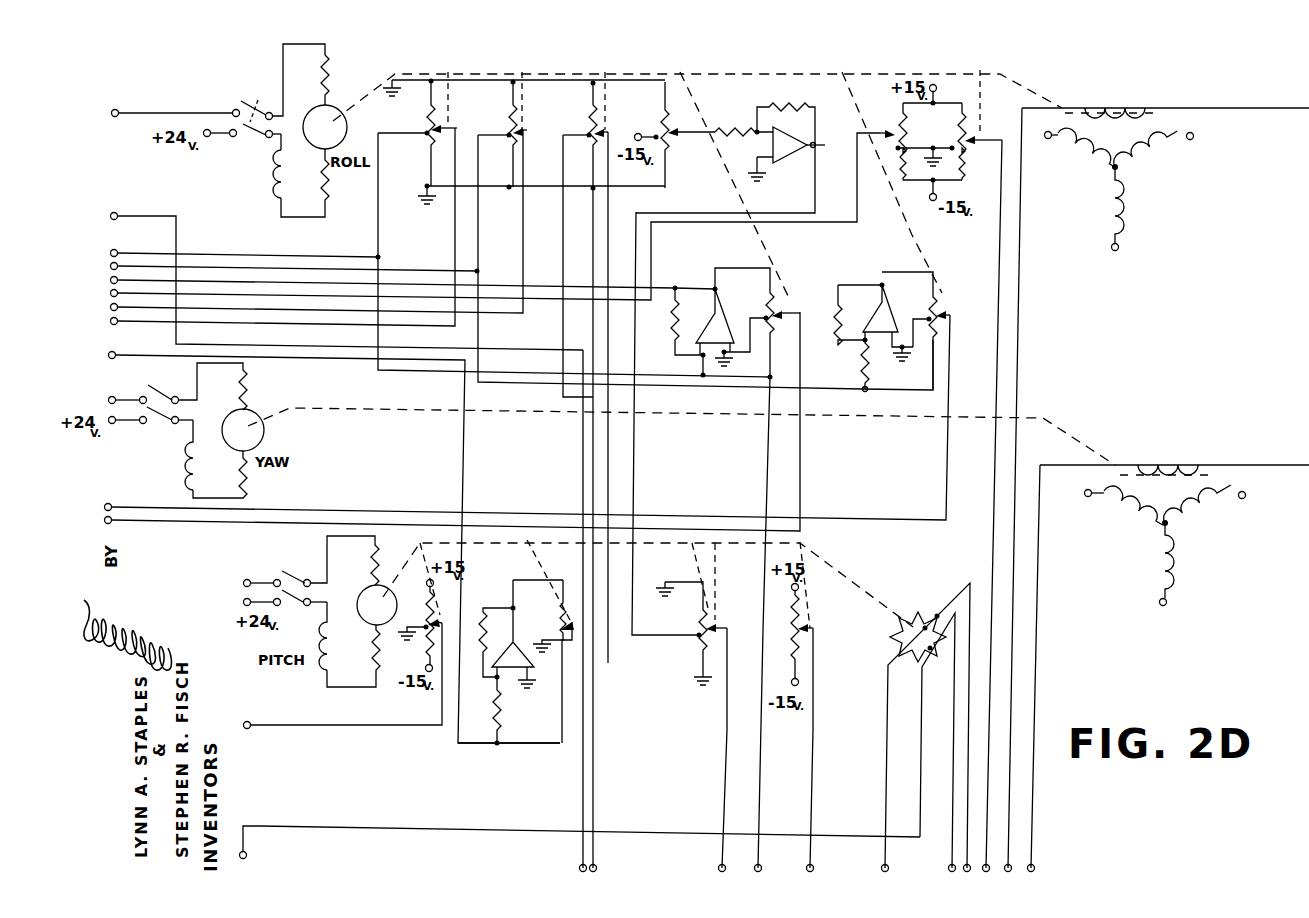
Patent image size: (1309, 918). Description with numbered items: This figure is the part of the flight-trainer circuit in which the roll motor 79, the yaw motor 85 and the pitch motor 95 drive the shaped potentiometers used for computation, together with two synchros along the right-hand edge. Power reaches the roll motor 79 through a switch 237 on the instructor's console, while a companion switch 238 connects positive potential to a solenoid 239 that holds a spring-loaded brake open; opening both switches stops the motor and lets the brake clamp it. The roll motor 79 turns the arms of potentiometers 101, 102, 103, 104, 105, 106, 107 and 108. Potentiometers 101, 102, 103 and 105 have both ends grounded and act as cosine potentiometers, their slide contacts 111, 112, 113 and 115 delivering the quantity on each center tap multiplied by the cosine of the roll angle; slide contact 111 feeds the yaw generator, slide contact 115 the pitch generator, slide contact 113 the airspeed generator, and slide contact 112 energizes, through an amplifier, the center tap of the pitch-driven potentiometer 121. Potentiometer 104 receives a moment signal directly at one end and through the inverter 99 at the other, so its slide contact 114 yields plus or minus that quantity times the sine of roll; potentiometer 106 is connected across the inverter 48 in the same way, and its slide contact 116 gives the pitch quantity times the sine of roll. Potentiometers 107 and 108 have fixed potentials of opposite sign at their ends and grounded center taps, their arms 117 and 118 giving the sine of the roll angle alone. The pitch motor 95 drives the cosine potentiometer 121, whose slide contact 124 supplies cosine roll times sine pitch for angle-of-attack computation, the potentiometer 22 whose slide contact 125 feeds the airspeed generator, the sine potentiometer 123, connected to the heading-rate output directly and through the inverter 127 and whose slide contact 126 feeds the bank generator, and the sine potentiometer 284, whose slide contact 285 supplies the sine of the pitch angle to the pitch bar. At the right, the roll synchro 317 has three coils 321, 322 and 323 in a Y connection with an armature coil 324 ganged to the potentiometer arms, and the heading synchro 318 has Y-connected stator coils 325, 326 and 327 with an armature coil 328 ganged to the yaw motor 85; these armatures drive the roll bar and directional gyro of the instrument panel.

The pitch offset potentiometer 22 is at (427, 610).
The inverter 48 is at (705, 333).
The roll motor 79 is at (682, 111).
The yaw motor 85 is at (668, 427).
The pitch motor 95 is at (635, 585).
The inverter 99 is at (873, 337).
The potentiometer 101 is at (422, 123).
The potentiometer 102 is at (648, 135).
The potentiometer 103 is at (595, 106).
The potentiometer 104 is at (932, 298).
The potentiometer 105 is at (512, 106).
The potentiometer 106 is at (765, 293).
The potentiometer 107 is at (908, 136).
The potentiometer 108 is at (956, 136).
The slide contact 111 is at (456, 128).
The slide contact 112 is at (678, 136).
The slide contact 113 is at (587, 128).
The slide contact 114 is at (940, 313).
The slide contact 115 is at (510, 128).
The slide contact 116 is at (789, 318).
The potentiometer arm 117 is at (891, 130).
The potentiometer arm 118 is at (975, 142).
The potentiometer 121 is at (696, 628).
The potentiometer 123 is at (556, 622).
The slide contact 124 is at (722, 628).
The slide contact 125 is at (448, 609).
The slide contact 126 is at (578, 682).
The inverter 127 is at (521, 663).
The switch 237 is at (269, 105).
The switch 238 is at (259, 141).
The solenoid 239 is at (284, 182).
The potentiometer 284 is at (800, 614).
The slide contact 285 is at (810, 630).
The roll synchro 317 is at (1157, 475).
The heading synchro 318 is at (1169, 659).
The coil 321 is at (1096, 152).
The coil 322 is at (1162, 146).
The coil 323 is at (1112, 204).
The armature coil 324 is at (1111, 98).
The stator coil 325 is at (1141, 514).
The stator coil 326 is at (1207, 508).
The stator coil 327 is at (1164, 560).
The armature coil 328 is at (1179, 475).